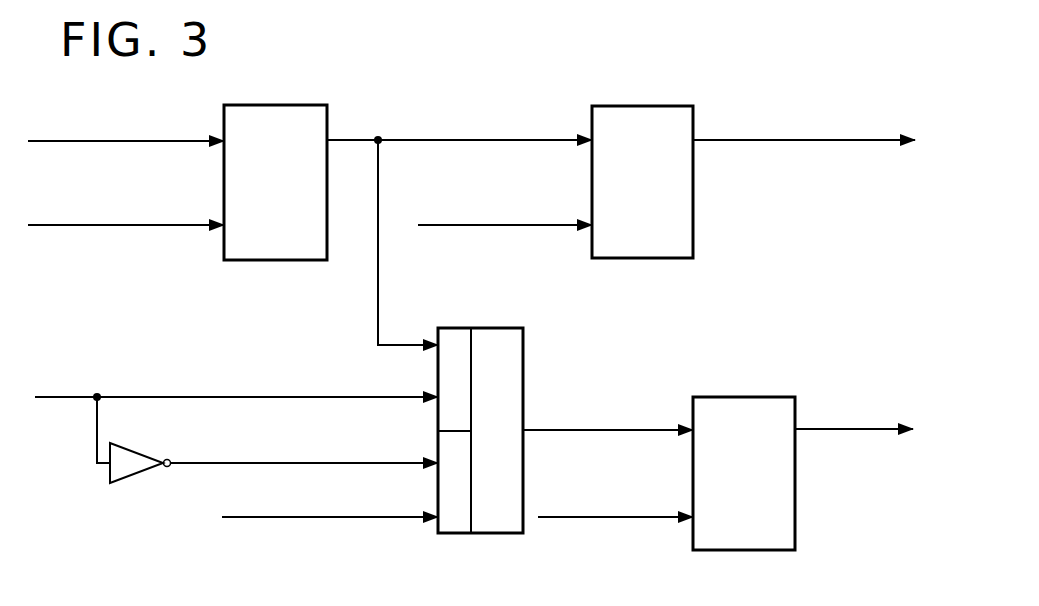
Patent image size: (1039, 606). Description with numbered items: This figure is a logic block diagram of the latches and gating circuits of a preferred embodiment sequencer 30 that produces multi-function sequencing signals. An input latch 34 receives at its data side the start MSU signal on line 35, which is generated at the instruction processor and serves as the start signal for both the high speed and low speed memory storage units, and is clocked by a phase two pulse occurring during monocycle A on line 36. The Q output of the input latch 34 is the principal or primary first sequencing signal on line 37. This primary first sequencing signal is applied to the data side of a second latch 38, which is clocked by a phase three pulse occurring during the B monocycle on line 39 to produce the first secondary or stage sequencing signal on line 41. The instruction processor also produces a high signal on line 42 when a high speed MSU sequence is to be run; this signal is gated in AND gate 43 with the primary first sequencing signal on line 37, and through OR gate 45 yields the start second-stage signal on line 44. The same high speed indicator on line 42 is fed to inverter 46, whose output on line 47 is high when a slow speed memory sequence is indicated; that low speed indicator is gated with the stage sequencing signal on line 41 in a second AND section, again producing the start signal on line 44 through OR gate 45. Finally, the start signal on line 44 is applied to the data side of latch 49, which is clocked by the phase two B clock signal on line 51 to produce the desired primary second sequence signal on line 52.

The sequencer 30 is at (831, 300).
The input latch 34 is at (260, 261).
The line 35 is at (117, 142).
The line 36 is at (117, 226).
The line 37 is at (487, 141).
The latch 38 is at (633, 260).
The line 39 is at (495, 226).
The line 41 is at (748, 143).
The line 42 is at (64, 399).
The AND gate 43 is at (452, 328).
The line 44 is at (588, 432).
The OR gate 45 is at (503, 328).
The inverter 46 is at (133, 474).
The line 47 is at (205, 466).
The latch 49 is at (727, 396).
The line 51 is at (618, 520).
The line 52 is at (818, 431).